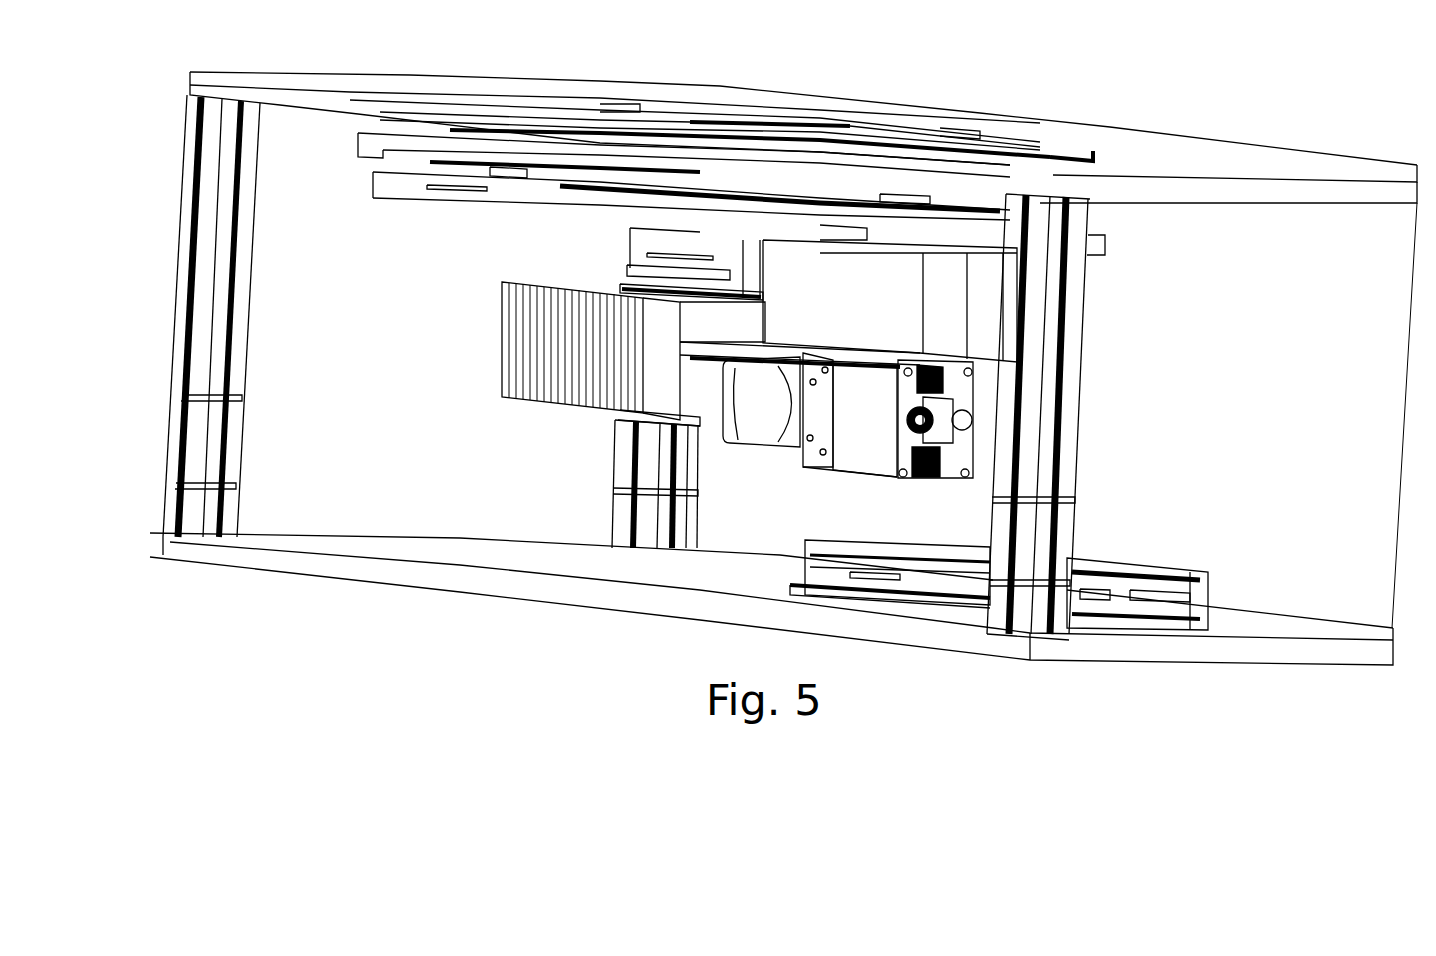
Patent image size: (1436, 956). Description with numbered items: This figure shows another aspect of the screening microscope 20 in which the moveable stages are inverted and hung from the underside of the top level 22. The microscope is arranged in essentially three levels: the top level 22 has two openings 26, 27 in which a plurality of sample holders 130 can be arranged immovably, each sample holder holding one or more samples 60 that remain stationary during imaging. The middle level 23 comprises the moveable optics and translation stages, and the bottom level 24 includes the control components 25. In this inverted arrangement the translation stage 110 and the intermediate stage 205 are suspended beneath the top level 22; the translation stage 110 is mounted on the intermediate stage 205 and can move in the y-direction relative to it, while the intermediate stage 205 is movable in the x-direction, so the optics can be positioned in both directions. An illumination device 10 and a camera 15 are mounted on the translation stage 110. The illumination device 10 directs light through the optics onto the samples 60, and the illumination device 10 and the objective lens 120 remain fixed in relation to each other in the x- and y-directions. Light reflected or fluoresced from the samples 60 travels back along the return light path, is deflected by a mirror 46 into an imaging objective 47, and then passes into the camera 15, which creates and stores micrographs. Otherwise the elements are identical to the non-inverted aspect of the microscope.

The screening microscope 20 is at (803, 90).
The top level 22 is at (1228, 388).
The middle level 23 is at (657, 176).
The bottom level 24 is at (771, 380).
The control components 25 is at (1208, 577).
The opening 26 is at (922, 147).
The opening 27 is at (640, 106).
The samples 60 is at (693, 122).
The translation stage 110 is at (762, 187).
The sample holders 130 is at (906, 124).
The objective lens 120 is at (691, 264).
The intermediate stage 205 is at (893, 242).
The illumination device 10 is at (760, 303).
The imaging objective 47 is at (761, 402).
The camera 15 is at (888, 415).
The mirror 46 is at (682, 378).